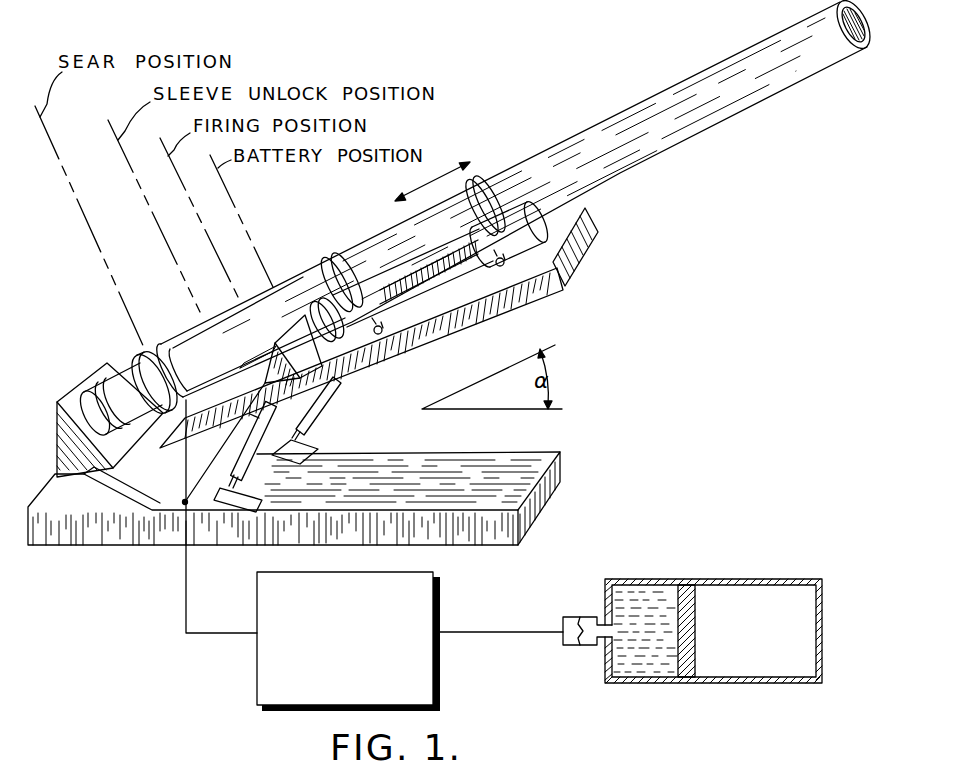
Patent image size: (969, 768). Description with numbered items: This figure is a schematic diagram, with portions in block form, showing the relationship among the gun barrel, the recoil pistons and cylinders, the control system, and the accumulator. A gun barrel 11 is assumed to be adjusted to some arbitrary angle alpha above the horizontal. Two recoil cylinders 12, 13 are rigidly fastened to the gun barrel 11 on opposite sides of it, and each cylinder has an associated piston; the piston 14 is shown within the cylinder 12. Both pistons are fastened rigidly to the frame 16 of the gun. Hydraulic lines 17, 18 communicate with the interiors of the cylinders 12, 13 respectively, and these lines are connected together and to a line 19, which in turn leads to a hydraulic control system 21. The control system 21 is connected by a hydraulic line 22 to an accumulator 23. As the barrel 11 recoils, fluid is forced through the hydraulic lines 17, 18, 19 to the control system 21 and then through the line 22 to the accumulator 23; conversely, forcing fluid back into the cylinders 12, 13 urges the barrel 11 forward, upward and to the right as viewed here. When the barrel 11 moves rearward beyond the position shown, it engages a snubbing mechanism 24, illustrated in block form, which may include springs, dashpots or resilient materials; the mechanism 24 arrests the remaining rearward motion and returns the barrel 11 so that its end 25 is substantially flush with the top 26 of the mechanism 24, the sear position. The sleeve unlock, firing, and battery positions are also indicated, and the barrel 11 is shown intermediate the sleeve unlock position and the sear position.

The gun barrel 11 is at (672, 143).
The recoil cylinder 12 is at (565, 237).
The recoil cylinder 13 is at (572, 212).
The piston 14 is at (432, 300).
The frame 16 is at (520, 292).
The hydraulic line 17 is at (186, 502).
The hydraulic line 18 is at (218, 470).
The line 19 is at (240, 632).
The hydraulic control system 21 is at (437, 602).
The hydraulic line 22 is at (473, 633).
The accumulator 23 is at (640, 580).
The snubbing mechanism 24 is at (160, 411).
The end 25 is at (167, 343).
The top 26 is at (142, 357).